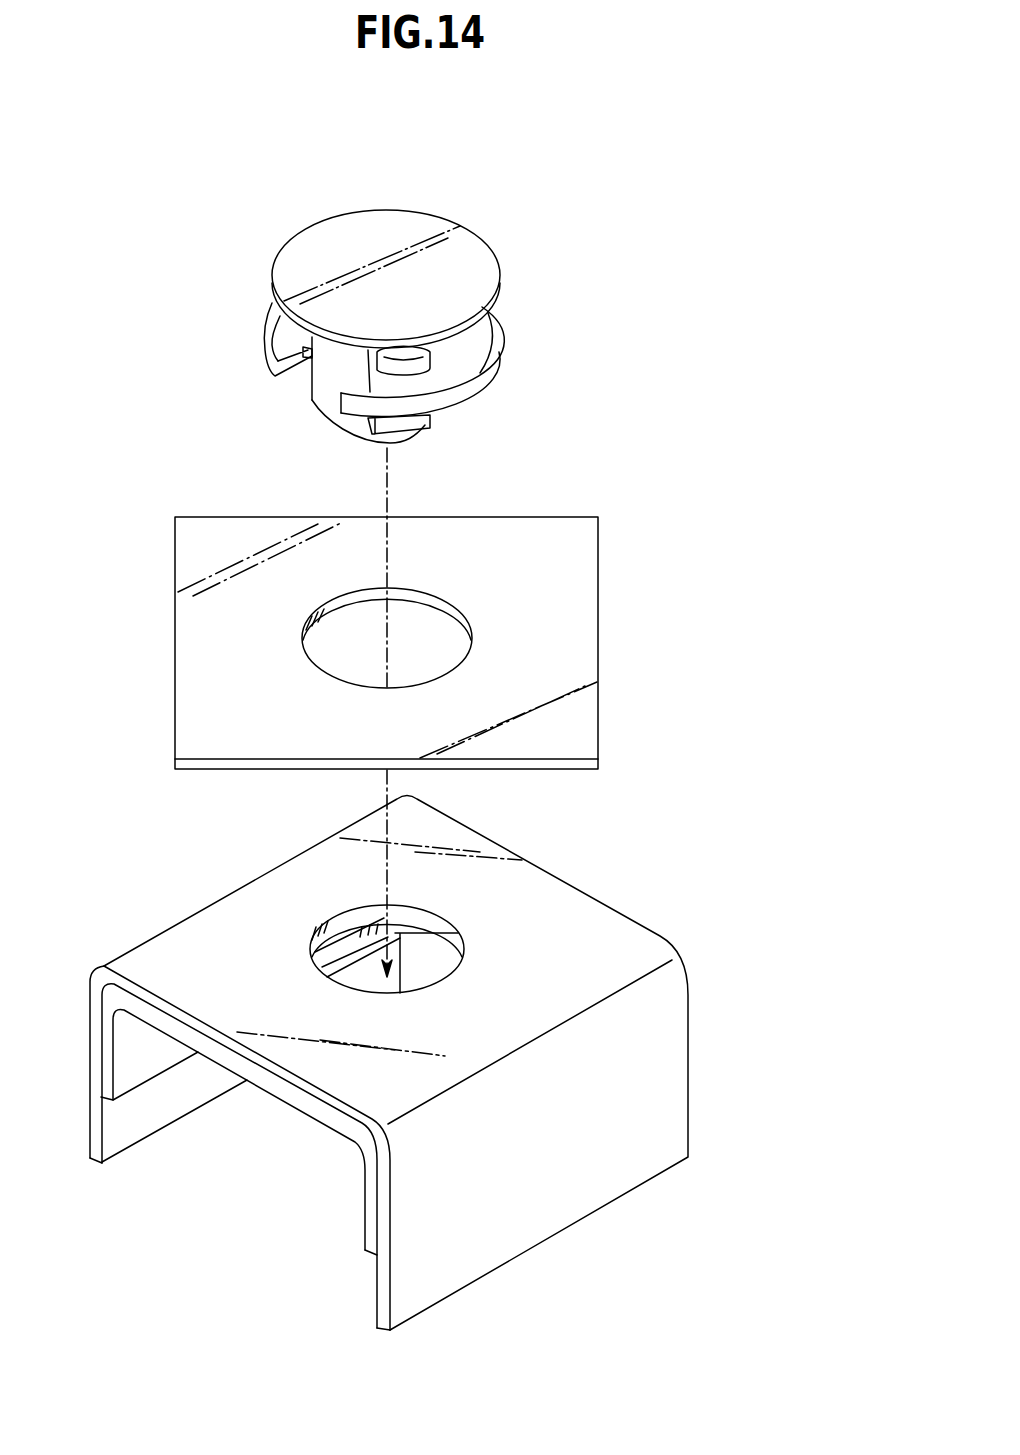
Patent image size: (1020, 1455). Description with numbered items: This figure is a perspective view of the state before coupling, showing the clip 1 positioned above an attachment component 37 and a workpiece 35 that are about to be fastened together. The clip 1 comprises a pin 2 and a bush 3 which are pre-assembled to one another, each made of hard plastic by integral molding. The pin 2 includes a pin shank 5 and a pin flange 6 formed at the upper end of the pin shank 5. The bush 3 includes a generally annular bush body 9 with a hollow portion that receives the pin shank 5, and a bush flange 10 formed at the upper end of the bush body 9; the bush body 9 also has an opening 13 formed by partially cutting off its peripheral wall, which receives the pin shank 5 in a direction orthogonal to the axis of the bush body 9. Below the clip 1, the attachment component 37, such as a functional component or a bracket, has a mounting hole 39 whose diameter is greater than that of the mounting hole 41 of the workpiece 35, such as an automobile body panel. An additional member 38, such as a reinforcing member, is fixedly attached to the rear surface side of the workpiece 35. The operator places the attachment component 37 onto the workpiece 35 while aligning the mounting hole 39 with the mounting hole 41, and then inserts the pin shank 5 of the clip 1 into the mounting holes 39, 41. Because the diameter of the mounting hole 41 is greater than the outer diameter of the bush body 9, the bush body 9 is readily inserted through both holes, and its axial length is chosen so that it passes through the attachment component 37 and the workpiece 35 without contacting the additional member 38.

The clip 1 is at (427, 307).
The pin 2 is at (308, 385).
The bush 3 is at (512, 334).
The pin shank 5 is at (327, 377).
The pin flange 6 is at (320, 248).
The bush body 9 is at (407, 373).
The bush flange 10 is at (287, 333).
The opening 13 is at (277, 380).
The workpiece 35 is at (460, 1063).
The attachment component 37 is at (405, 643).
The additional member 38 is at (332, 1130).
The mounting hole 39 is at (357, 598).
The mounting hole 41 is at (353, 917).